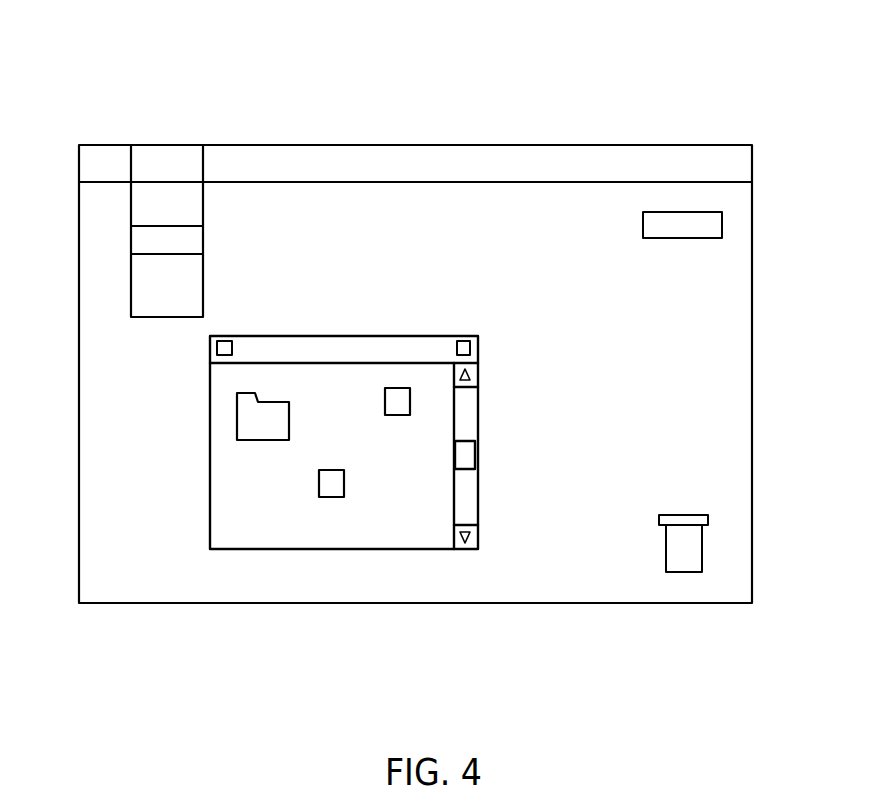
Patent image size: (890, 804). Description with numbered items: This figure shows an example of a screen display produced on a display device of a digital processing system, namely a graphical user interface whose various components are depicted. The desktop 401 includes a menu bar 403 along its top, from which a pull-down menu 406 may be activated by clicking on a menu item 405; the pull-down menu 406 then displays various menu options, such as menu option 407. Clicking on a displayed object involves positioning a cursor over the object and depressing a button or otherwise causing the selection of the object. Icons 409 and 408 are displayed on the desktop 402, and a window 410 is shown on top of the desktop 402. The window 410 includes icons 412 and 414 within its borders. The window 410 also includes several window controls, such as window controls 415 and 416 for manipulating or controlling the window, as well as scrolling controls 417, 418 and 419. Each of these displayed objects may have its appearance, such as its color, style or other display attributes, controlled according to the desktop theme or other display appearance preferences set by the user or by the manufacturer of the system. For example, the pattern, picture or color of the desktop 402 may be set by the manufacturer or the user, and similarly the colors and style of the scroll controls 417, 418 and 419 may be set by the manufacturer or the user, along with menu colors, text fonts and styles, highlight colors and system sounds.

The desktop 401 is at (458, 99).
The desktop 402 is at (725, 380).
The menu bar 403 is at (612, 158).
The menu item 405 is at (177, 160).
The pull-down menu 406 is at (138, 318).
The menu option 407 is at (197, 240).
The icon 408 is at (702, 543).
The icon 409 is at (690, 238).
The window 410 is at (265, 549).
The icon 412 is at (253, 443).
The icon 414 is at (398, 415).
The window control 415 is at (232, 348).
The window control 416 is at (465, 341).
The scrolling control 417 is at (470, 373).
The scrolling control 418 is at (475, 537).
The scrolling control 419 is at (476, 450).